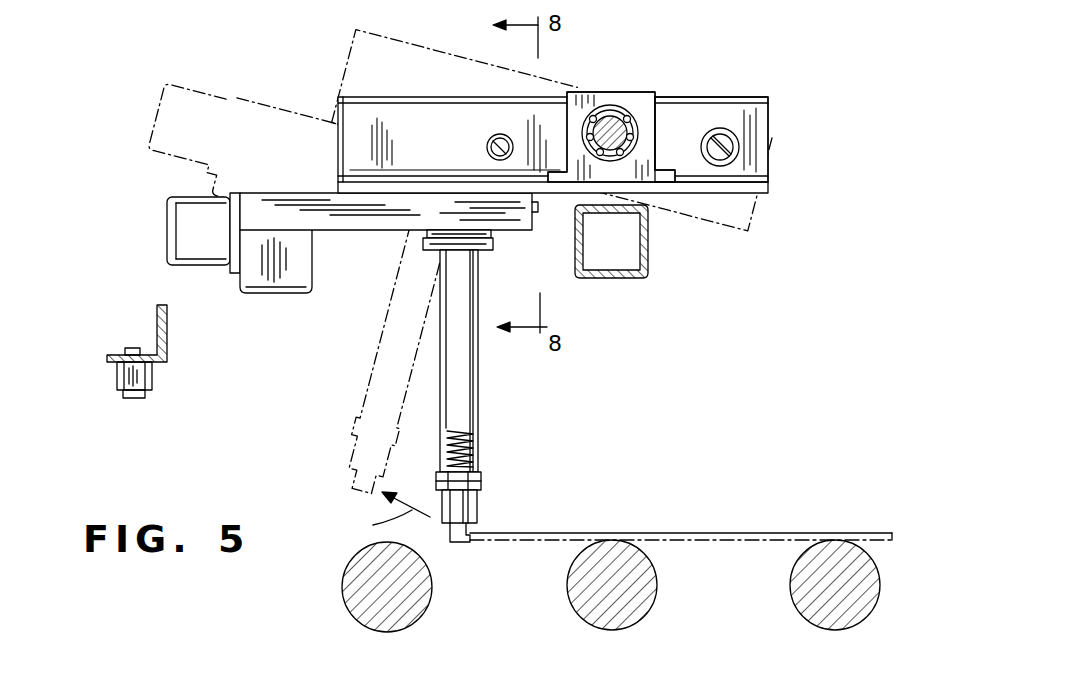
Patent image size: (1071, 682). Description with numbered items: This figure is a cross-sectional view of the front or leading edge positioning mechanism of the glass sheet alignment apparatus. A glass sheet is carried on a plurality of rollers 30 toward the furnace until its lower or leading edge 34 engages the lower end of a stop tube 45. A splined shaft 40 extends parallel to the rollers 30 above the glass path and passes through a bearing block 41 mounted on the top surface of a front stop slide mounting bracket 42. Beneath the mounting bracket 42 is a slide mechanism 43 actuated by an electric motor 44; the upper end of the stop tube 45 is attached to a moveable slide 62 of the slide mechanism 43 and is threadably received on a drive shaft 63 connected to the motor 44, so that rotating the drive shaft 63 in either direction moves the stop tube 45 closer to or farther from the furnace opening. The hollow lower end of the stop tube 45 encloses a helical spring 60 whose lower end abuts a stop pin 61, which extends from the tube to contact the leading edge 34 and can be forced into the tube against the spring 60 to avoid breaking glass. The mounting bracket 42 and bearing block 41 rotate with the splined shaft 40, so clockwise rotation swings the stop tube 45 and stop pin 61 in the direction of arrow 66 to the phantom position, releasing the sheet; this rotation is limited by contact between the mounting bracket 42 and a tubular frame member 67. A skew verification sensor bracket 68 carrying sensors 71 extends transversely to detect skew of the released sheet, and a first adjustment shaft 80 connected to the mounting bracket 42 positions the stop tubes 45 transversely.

The rollers 30 is at (342, 585).
The leading edge 34 is at (464, 547).
The splined shaft 40 is at (608, 112).
The bearing block 41 is at (648, 100).
The front stop slide mounting bracket 42 is at (760, 107).
The slide mechanism 43 is at (358, 226).
The electric motor 44 is at (172, 226).
The stop tube 45 is at (478, 385).
The helical spring 60 is at (478, 438).
The stop pin 61 is at (449, 544).
The moveable slide 62 is at (416, 256).
The drive shaft 63 is at (535, 214).
The arrow 66 is at (385, 513).
The tubular frame member 67 is at (648, 248).
The skew verification sensor bracket 68 is at (167, 333).
The sensors 71 is at (118, 391).
The first adjustment shaft 80 is at (488, 148).